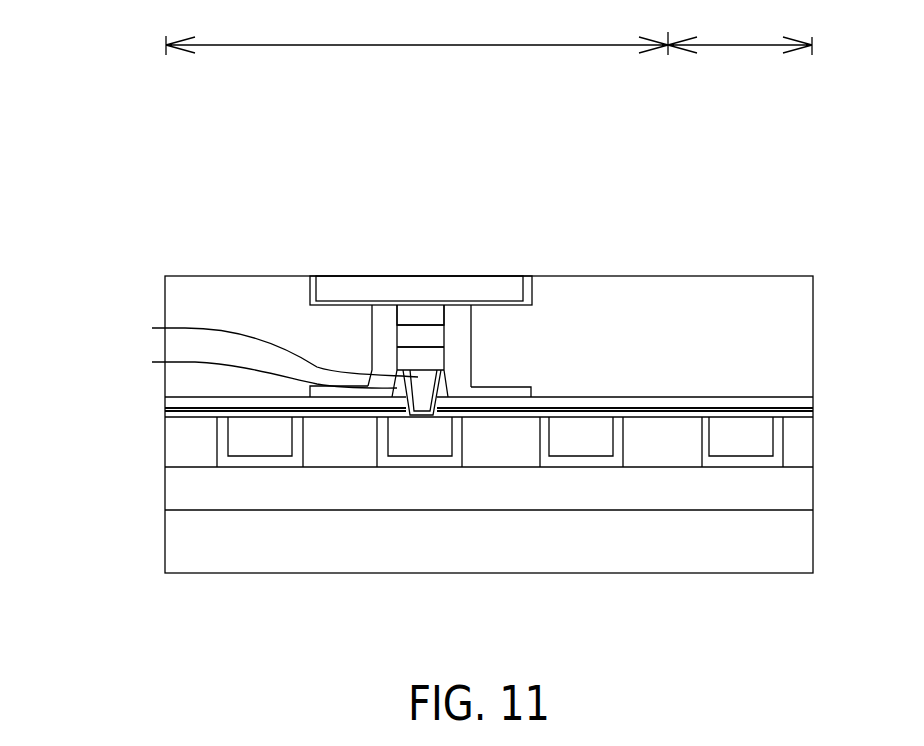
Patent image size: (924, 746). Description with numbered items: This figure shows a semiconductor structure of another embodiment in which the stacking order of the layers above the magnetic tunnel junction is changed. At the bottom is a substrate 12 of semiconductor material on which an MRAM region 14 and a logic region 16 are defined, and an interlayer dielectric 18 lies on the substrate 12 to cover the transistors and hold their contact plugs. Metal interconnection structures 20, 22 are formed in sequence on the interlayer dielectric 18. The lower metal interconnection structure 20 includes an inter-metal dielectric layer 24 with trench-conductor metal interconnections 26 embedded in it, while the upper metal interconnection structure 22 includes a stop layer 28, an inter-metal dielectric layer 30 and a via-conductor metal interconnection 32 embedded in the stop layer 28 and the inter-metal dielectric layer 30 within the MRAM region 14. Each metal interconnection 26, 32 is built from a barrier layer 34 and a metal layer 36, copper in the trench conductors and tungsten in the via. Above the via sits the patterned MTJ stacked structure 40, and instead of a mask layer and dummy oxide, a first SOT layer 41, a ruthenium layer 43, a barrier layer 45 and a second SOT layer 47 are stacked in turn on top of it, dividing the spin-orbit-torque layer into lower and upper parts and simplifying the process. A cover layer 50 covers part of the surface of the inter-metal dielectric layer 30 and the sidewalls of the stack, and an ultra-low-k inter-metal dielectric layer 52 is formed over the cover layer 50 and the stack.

The substrate 12 is at (650, 563).
The MRAM region 14 is at (417, 32).
The logic region 16 is at (740, 31).
The interlayer dielectric 18 is at (650, 502).
The metal interconnection structure 20 is at (415, 487).
The metal interconnection structure 22 is at (485, 396).
The inter-metal dielectric layer 24 is at (583, 443).
The metal interconnection 26 is at (125, 410).
The stop layer 28 is at (793, 413).
The inter-metal dielectric layer 30 is at (800, 402).
The metal interconnection 32 is at (125, 307).
The barrier layer 34 is at (397, 388).
The metal layer 36 is at (418, 377).
The MTJ stacked structure 40 is at (433, 357).
The first SOT layer 41 is at (407, 337).
The ruthenium layer 43 is at (433, 322).
The barrier layer 45 is at (525, 290).
The second SOT layer 47 is at (497, 287).
The cover layer 50 is at (325, 393).
The inter-metal dielectric layer 52 is at (688, 341).